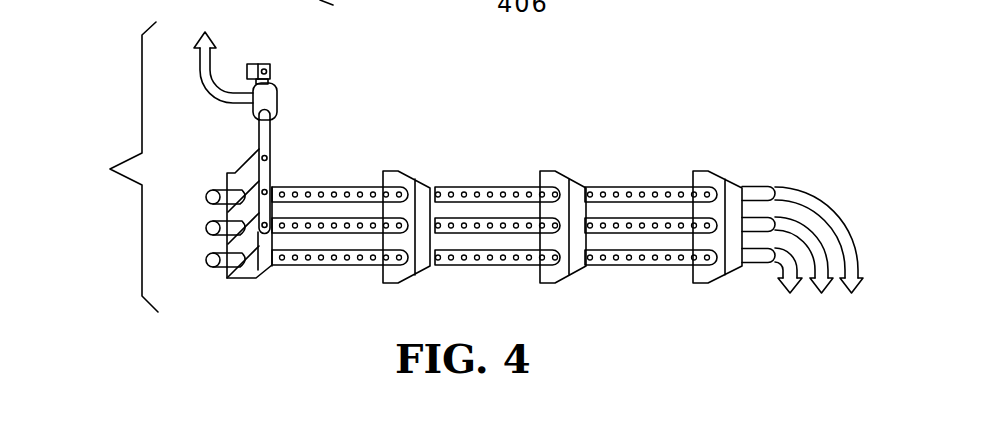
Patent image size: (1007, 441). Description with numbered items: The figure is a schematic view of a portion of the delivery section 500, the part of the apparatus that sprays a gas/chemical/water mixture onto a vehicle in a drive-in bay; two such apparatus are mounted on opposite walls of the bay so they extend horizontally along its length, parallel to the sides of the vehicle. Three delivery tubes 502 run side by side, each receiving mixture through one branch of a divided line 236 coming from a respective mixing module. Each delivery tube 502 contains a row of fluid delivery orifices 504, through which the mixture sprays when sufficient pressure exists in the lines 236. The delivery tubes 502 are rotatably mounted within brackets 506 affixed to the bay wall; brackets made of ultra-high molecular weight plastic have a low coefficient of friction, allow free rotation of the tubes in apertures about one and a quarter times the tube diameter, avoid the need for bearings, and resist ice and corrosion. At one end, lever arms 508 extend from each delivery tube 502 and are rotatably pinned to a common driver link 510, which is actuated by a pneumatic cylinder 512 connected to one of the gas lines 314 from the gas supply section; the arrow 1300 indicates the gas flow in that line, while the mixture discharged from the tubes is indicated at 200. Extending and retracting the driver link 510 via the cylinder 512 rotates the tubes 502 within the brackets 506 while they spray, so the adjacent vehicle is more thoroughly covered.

The delivery section 500 is at (101, 167).
The flow direction arrow of recycled stream 1300 is at (209, 26).
The gas line 314 is at (222, 96).
The pneumatic cylinder 512 is at (277, 98).
The common driver link 510 is at (272, 144).
The lever arms 508 is at (244, 238).
The delivery tubes 502 is at (445, 187).
The fluid delivery orifices 504 is at (515, 193).
The brackets 506 is at (720, 173).
The divided lines 236 is at (807, 239).
The product output 200 is at (820, 303).